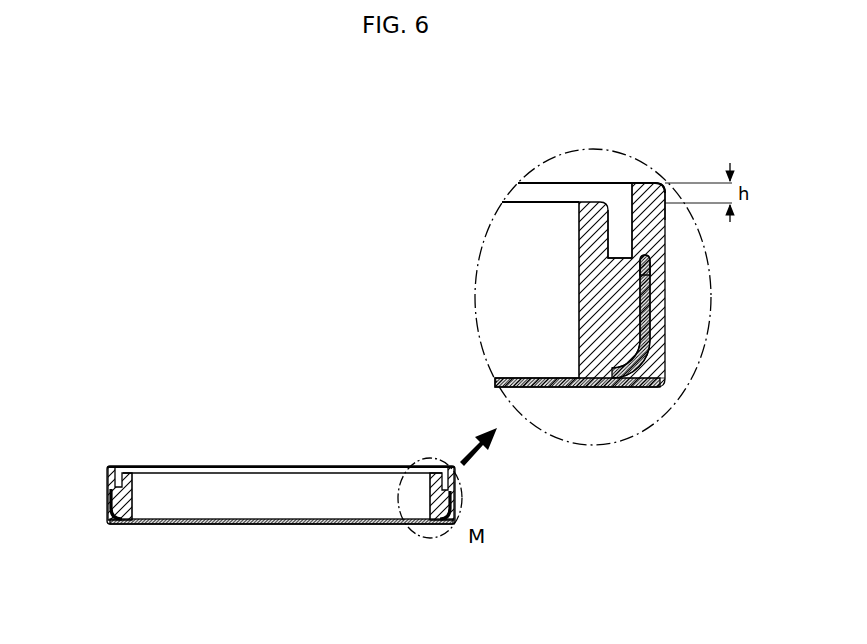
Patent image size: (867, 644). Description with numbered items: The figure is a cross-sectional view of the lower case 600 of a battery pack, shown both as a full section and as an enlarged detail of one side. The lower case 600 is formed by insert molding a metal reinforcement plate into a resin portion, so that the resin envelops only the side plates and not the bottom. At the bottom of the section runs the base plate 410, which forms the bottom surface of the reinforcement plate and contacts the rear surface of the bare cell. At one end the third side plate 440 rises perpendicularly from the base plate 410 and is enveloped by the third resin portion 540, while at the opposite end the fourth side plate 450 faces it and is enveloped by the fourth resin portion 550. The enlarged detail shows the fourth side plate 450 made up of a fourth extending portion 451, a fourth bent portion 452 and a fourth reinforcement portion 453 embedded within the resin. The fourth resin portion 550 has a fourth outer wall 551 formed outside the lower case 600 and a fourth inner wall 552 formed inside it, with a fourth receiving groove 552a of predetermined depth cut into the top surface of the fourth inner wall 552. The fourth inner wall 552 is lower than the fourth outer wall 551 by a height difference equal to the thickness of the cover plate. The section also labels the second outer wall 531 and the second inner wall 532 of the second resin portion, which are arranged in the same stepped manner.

The lower case 600 is at (160, 416).
The second outer wall 531 is at (288, 470).
The second inner wall 532 is at (343, 490).
The third resin portion 540 is at (104, 499).
The third side plate 440 is at (110, 526).
The base plate 410 is at (358, 525).
The fourth side plate 450 is at (451, 526).
The fourth extending portion 451 is at (643, 345).
The fourth bent portion 452 is at (651, 259).
The fourth reinforcement portion 453 is at (652, 302).
The fourth resin portion 550 is at (459, 497).
The fourth outer wall 551 is at (660, 195).
The fourth inner wall 552 is at (590, 200).
The fourth receiving groove 552a is at (618, 220).